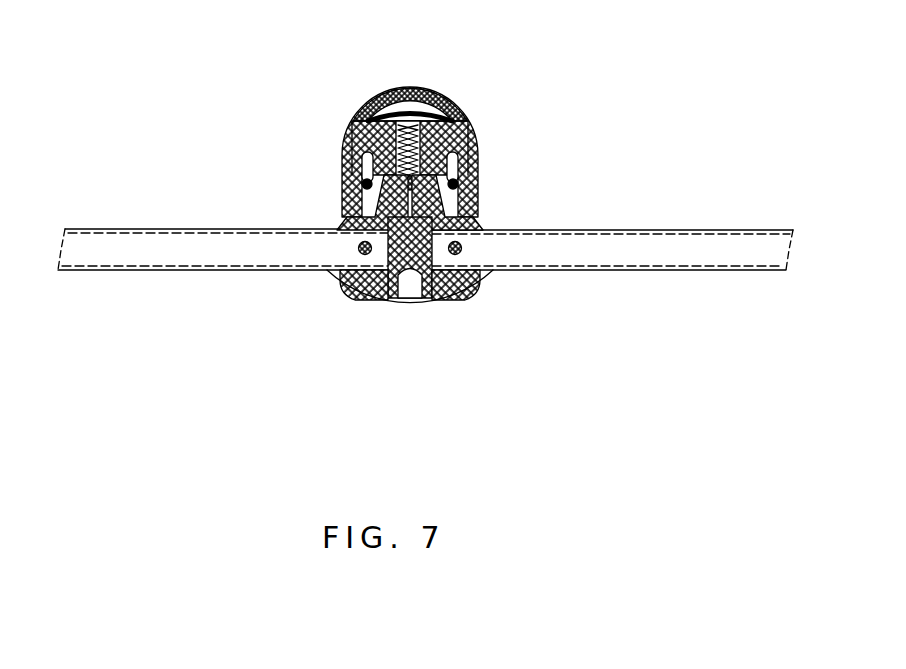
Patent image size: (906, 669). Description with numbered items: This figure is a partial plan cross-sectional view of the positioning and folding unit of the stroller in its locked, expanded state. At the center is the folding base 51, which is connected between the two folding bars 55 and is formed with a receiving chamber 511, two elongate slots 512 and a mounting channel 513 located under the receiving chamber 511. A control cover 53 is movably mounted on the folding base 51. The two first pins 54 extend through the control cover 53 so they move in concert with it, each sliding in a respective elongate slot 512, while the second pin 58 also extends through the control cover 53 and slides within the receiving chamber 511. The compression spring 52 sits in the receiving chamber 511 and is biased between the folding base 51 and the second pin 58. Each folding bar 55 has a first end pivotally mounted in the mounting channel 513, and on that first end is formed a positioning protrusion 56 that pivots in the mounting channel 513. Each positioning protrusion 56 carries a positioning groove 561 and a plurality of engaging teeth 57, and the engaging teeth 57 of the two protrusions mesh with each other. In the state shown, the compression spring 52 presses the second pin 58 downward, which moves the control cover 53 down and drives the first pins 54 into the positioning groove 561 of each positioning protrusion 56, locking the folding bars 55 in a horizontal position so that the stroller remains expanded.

The folding base 51 is at (470, 133).
The receiving chamber 511 is at (412, 113).
The elongate slot 512 is at (358, 112).
The mounting channel 513 is at (350, 193).
The compression spring 52 is at (399, 126).
The control cover 53 is at (456, 106).
The first pin 54 is at (345, 140).
The folding bar 55 is at (136, 229).
The positioning protrusion 56 is at (343, 209).
The positioning groove 561 is at (460, 181).
The engaging teeth 57 is at (370, 293).
The second pin 58 is at (392, 292).